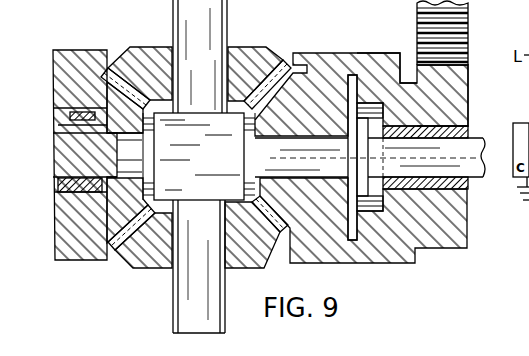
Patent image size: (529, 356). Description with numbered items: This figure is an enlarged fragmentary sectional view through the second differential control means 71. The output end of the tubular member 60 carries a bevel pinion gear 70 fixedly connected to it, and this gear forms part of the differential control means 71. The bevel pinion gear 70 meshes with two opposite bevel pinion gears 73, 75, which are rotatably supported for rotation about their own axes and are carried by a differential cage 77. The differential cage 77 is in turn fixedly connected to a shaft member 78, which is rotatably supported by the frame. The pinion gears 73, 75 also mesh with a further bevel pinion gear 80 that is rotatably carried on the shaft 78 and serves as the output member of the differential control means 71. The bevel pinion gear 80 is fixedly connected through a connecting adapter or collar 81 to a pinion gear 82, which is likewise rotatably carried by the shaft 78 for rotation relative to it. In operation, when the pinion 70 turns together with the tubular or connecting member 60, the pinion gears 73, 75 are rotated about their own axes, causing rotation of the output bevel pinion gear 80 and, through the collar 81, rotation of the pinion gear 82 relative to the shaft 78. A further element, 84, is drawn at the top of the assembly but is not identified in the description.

The tubular member 60 is at (90, 253).
The bevel pinion gear 70 is at (111, 64).
The second differential control means 71 is at (288, 42).
The bevel pinion gear 73 is at (153, 47).
The bevel pinion gear 75 is at (162, 256).
The differential cage 77 is at (236, 205).
The shaft member 78 is at (474, 137).
The bevel pinion gear 80 is at (312, 92).
The connecting adapter or collar 81 is at (382, 53).
The pinion gear 82 is at (468, 90).
The threaded stud 84 is at (467, 18).